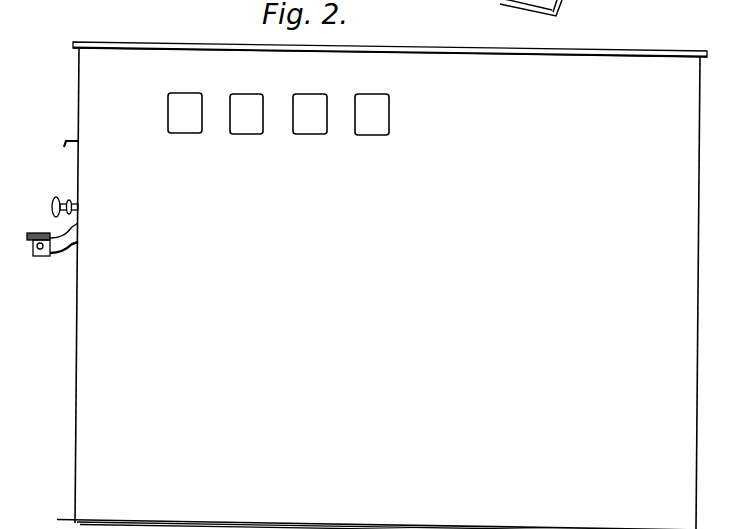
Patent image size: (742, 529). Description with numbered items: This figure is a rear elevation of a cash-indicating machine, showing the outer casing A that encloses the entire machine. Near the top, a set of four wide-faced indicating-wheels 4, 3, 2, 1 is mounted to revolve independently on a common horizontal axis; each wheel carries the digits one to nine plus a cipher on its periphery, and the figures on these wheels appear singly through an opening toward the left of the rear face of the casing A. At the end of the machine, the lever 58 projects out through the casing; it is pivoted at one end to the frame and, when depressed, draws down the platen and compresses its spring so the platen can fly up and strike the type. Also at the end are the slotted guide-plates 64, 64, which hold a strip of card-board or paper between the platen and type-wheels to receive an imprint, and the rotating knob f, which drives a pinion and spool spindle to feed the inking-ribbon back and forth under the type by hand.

The indicating-wheel 1 is at (383, 97).
The indicating-wheel 2 is at (318, 97).
The indicating-wheel 3 is at (258, 97).
The indicating-wheel 4 is at (192, 100).
The guide-plates 64 is at (76, 138).
The rotating knob f is at (52, 207).
The lever 58 is at (34, 243).
The outer casing A is at (350, 306).